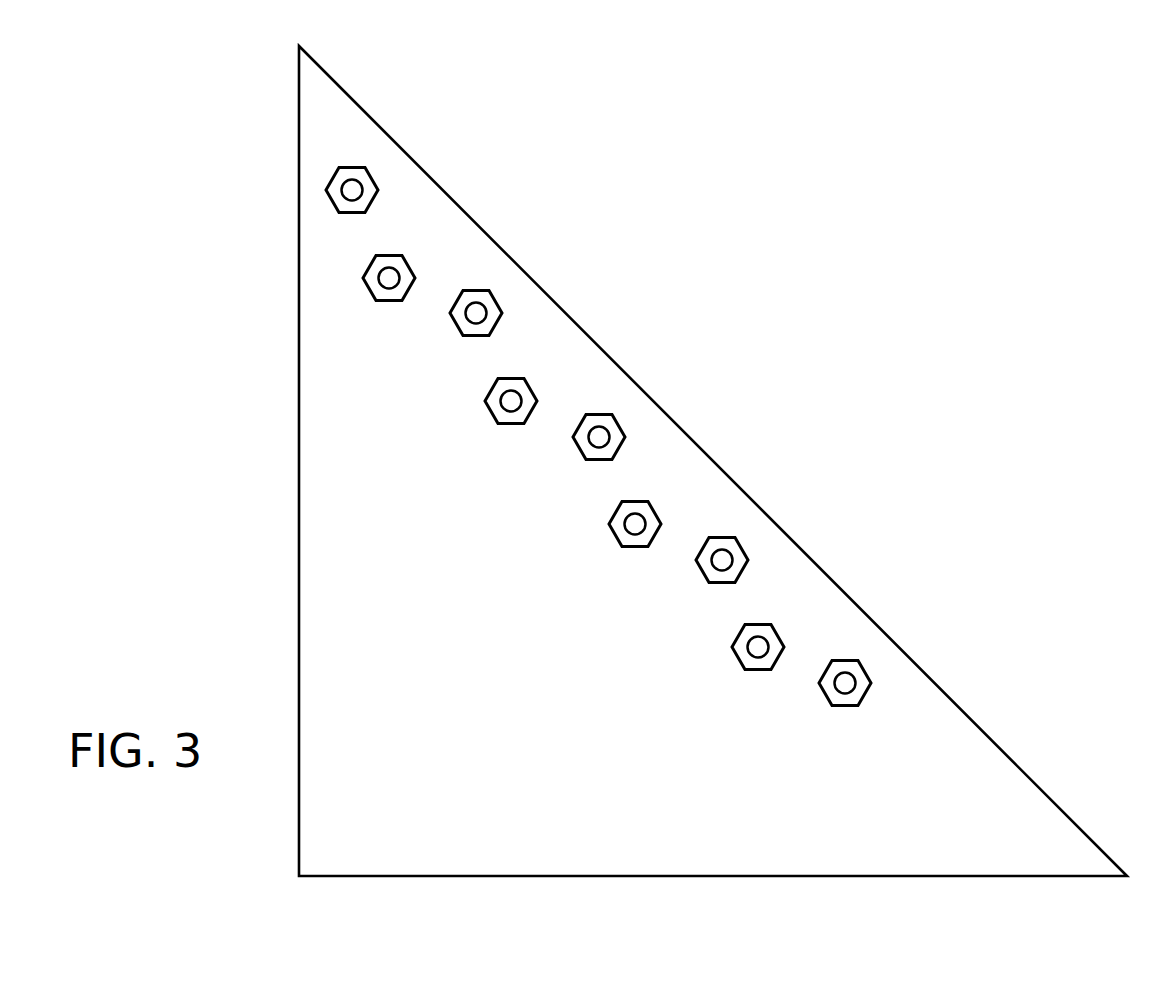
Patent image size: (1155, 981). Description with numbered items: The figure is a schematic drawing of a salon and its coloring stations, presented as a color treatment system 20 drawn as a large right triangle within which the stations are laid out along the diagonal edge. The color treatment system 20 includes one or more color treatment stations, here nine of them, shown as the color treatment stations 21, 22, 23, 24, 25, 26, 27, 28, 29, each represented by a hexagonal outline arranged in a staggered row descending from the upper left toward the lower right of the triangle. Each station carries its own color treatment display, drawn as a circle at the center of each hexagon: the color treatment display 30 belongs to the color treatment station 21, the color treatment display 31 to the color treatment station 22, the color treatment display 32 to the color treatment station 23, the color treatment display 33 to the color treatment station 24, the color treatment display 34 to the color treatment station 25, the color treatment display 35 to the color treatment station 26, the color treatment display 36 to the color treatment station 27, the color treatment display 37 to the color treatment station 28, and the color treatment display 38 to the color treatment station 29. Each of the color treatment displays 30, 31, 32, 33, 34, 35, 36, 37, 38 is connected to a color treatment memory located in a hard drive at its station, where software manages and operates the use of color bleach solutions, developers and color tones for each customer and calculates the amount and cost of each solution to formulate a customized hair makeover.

The color treatment system 20 is at (729, 418).
The color treatment station 21 is at (419, 203).
The color treatment station 22 is at (404, 347).
The color treatment station 23 is at (549, 338).
The color treatment station 24 is at (526, 467).
The color treatment station 25 is at (669, 473).
The color treatment station 26 is at (653, 597).
The color treatment station 27 is at (794, 594).
The color treatment station 28 is at (776, 717).
The color treatment station 29 is at (912, 717).
The color treatment display 30 is at (350, 190).
The color treatment display 31 is at (382, 278).
The color treatment display 32 is at (470, 317).
The color treatment display 33 is at (505, 405).
The color treatment display 34 is at (593, 441).
The color treatment display 35 is at (630, 527).
The color treatment display 36 is at (717, 563).
The color treatment display 37 is at (753, 650).
The color treatment display 38 is at (840, 688).